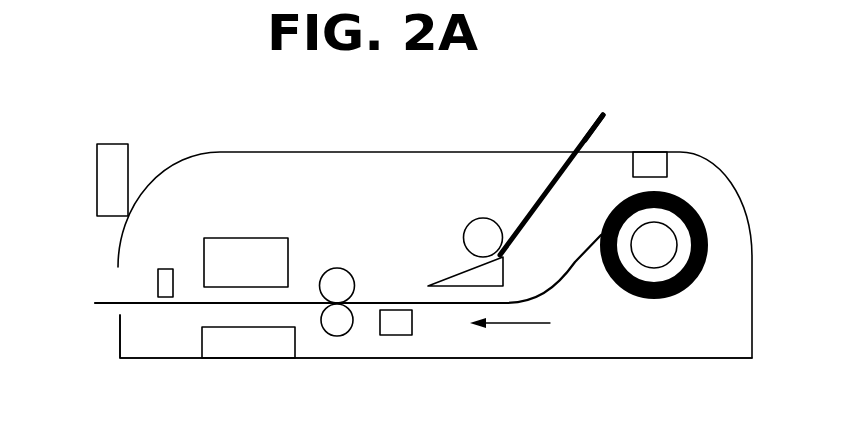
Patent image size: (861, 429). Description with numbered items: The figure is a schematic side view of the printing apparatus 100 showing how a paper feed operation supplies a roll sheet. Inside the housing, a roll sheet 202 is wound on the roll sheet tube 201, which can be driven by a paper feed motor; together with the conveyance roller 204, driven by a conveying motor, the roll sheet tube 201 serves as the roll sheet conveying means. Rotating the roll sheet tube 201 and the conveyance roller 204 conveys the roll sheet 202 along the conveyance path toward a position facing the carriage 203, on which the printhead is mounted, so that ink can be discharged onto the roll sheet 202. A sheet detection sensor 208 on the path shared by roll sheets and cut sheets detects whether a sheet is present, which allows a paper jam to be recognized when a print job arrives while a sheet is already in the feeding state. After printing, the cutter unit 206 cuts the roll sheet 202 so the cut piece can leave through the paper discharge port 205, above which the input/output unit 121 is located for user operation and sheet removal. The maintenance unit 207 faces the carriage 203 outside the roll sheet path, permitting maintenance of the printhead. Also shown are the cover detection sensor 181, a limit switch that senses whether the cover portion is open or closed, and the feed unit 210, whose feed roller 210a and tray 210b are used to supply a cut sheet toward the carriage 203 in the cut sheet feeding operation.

The printing apparatus 100 is at (335, 152).
The input/output unit 121 is at (97, 165).
The cover detection sensor 181 is at (649, 157).
The roll sheet tube 201 is at (703, 213).
The roll sheet 202 is at (418, 300).
The carriage 203 is at (250, 238).
The conveyance roller 204 is at (337, 268).
The paper discharge port 205 is at (120, 315).
The cutter unit 206 is at (165, 267).
The maintenance unit 207 is at (248, 350).
The sheet detection sensor 208 is at (397, 335).
The feed unit 210 is at (549, 188).
The feed roller 210a is at (472, 217).
The tray 210b is at (597, 120).